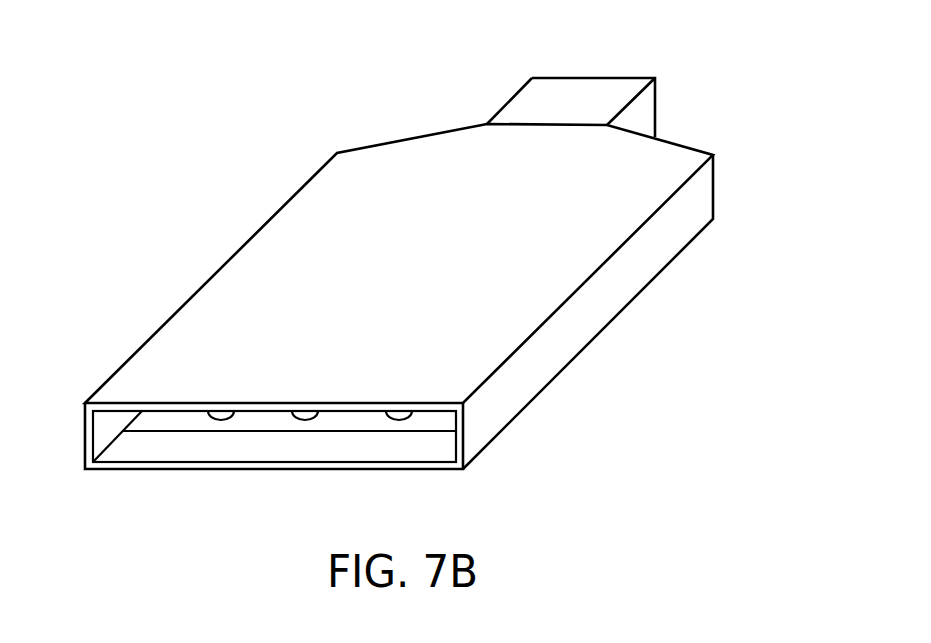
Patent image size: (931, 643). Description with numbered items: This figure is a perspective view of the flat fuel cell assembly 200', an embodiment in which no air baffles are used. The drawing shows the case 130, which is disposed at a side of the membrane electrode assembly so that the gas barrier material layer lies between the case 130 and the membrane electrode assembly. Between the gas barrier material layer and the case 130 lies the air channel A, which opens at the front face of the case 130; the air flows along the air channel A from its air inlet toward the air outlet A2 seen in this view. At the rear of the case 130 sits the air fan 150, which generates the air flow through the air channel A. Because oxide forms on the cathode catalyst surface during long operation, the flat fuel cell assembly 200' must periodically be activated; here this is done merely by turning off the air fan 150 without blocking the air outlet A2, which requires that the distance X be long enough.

The case 130 is at (533, 284).
The air fan 150 is at (612, 92).
The air channel A is at (165, 406).
The air outlet A2 is at (173, 445).
The distance X is at (257, 432).
The flat fuel cell assembly 200' is at (397, 293).